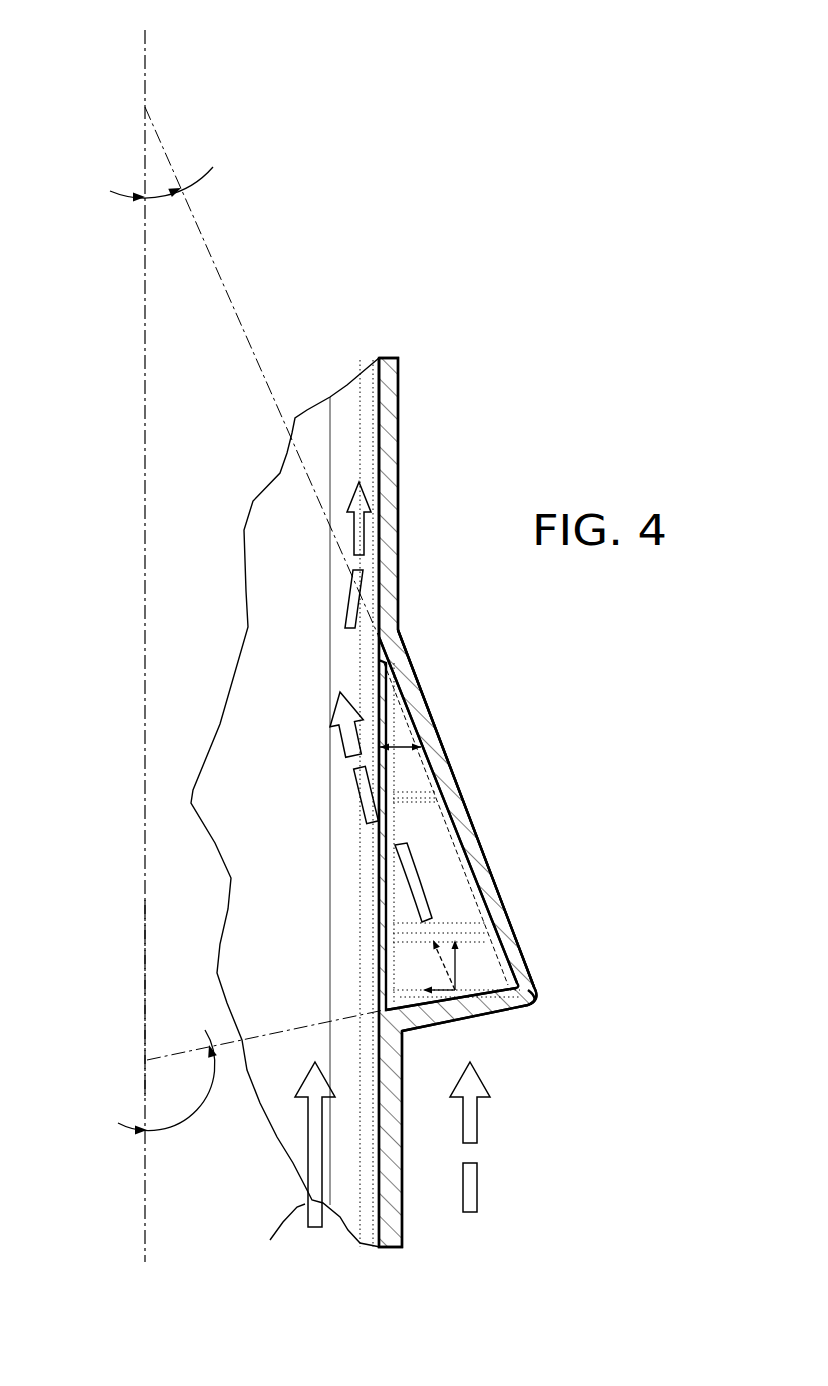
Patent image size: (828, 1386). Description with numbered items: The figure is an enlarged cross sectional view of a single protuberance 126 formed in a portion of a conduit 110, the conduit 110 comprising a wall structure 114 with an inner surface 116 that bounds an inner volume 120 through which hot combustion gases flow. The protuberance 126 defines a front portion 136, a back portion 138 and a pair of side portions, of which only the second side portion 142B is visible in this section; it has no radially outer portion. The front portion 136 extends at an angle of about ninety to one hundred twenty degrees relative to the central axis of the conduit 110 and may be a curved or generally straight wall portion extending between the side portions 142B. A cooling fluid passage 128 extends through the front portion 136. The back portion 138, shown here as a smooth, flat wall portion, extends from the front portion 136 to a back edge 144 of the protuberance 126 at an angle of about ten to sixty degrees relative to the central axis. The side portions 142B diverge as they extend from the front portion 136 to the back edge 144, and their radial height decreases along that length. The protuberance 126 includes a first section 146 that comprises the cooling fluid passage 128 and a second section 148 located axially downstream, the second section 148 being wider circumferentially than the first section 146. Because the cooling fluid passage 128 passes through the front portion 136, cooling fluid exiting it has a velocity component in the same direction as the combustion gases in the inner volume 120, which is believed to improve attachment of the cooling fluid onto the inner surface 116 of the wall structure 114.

The conduit 110 is at (505, 437).
The wall structure 114 is at (403, 382).
The inner surface 116 is at (377, 417).
The inner volume 120 is at (300, 812).
The protuberance 126 is at (535, 967).
The cooling fluid passage 128 is at (488, 1008).
The front portion 136 is at (513, 1004).
The back portion 138 is at (415, 706).
The second side portion 142B is at (405, 970).
The back edge 144 is at (380, 653).
The first section 146 is at (540, 1008).
The second section 148 is at (453, 758).